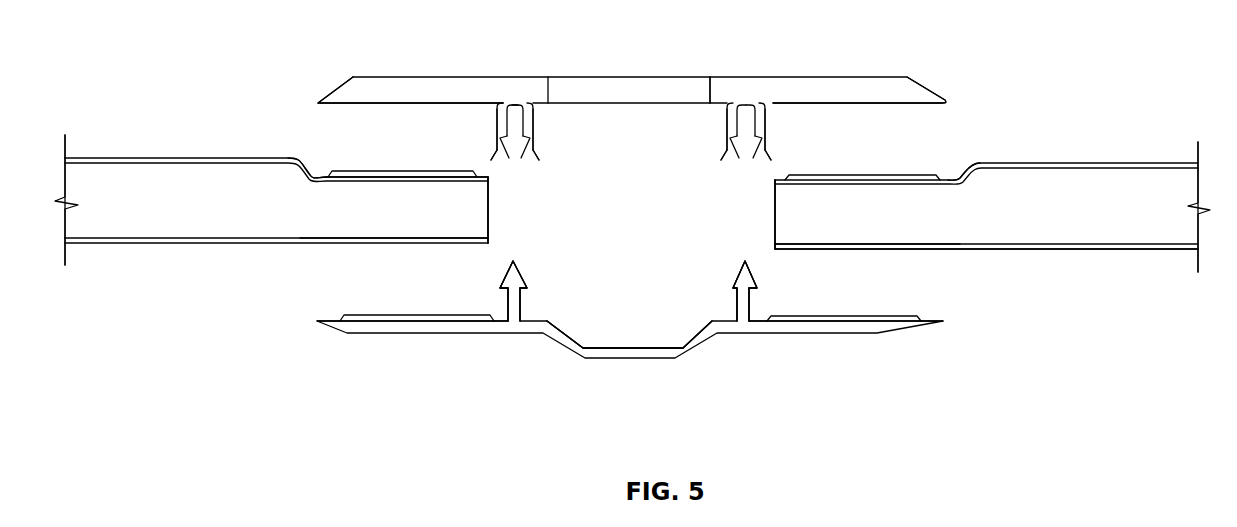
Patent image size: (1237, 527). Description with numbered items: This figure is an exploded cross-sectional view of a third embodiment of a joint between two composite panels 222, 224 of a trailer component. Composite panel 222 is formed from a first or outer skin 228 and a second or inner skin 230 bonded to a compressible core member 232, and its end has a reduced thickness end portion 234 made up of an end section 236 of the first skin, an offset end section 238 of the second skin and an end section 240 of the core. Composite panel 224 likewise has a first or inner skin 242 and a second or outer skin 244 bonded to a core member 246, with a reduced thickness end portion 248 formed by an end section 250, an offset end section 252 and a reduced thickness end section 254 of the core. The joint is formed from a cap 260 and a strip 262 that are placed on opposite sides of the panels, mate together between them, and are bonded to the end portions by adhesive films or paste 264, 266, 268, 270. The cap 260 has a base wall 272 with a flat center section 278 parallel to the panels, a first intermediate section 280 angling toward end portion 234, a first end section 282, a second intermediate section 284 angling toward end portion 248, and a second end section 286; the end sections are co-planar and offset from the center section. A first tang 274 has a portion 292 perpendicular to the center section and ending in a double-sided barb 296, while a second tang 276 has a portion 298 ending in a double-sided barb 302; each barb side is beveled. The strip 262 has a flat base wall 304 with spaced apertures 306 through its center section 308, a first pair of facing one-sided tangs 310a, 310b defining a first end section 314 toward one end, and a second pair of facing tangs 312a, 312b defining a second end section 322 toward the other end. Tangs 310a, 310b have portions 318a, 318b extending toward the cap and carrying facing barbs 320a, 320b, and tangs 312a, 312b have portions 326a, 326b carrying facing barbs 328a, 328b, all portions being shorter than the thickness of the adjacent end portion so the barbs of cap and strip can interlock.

The composite panel 222 is at (91, 154).
The composite panel 224 is at (1039, 158).
The first or outer skin 228 is at (108, 246).
The second or inner skin 230 is at (152, 157).
The compressible core member 232 is at (172, 221).
The reduced thickness end portion 234 is at (329, 216).
The end section 236 is at (360, 244).
The end section 238 is at (345, 175).
The end section 240 is at (485, 221).
The first or inner skin 242 is at (1050, 250).
The second or outer skin 244 is at (1125, 164).
The compressible core member 246 is at (1145, 229).
The reduced thickness end portion 248 is at (959, 230).
The end section 250 is at (862, 246).
The end section 252 is at (872, 184).
The reduced thickness end section 254 is at (776, 215).
The cap 260 is at (776, 347).
The strip 262 is at (784, 70).
The adhesive film or paste 264 is at (413, 317).
The adhesive film or paste 266 is at (854, 319).
The adhesive film or paste 268 is at (393, 170).
The adhesive film or paste 270 is at (878, 178).
The base wall 272 is at (578, 364).
The first tang 274 is at (529, 267).
The second tang 276 is at (732, 267).
The center section 278 is at (628, 362).
The first intermediate section 280 is at (556, 343).
The first end section 282 is at (438, 335).
The second intermediate section 284 is at (702, 346).
The second end section 286 is at (872, 338).
The portion of first tang 292 is at (525, 303).
The double-sided barb 296 is at (505, 278).
The portion of second tang 298 is at (754, 304).
The double-sided barb 302 is at (753, 278).
The flat base wall 304 is at (522, 77).
The apertures 306 is at (710, 92).
The center section 308 is at (538, 108).
The one-sided tang 310a is at (493, 113).
The one-sided tang 310b is at (520, 112).
The one-sided tang 312a is at (724, 114).
The one-sided tang 312b is at (769, 114).
The first end section 314 is at (372, 82).
The portion of first tang 318a is at (496, 130).
The portion of first tang 318b is at (540, 130).
The barb 320a is at (496, 146).
The barb 320b is at (543, 152).
The second end section 322 is at (862, 78).
The portion of second tang 326a is at (727, 137).
The portion of second tang 326b is at (770, 137).
The barb 328a is at (727, 156).
The barb 328b is at (751, 160).